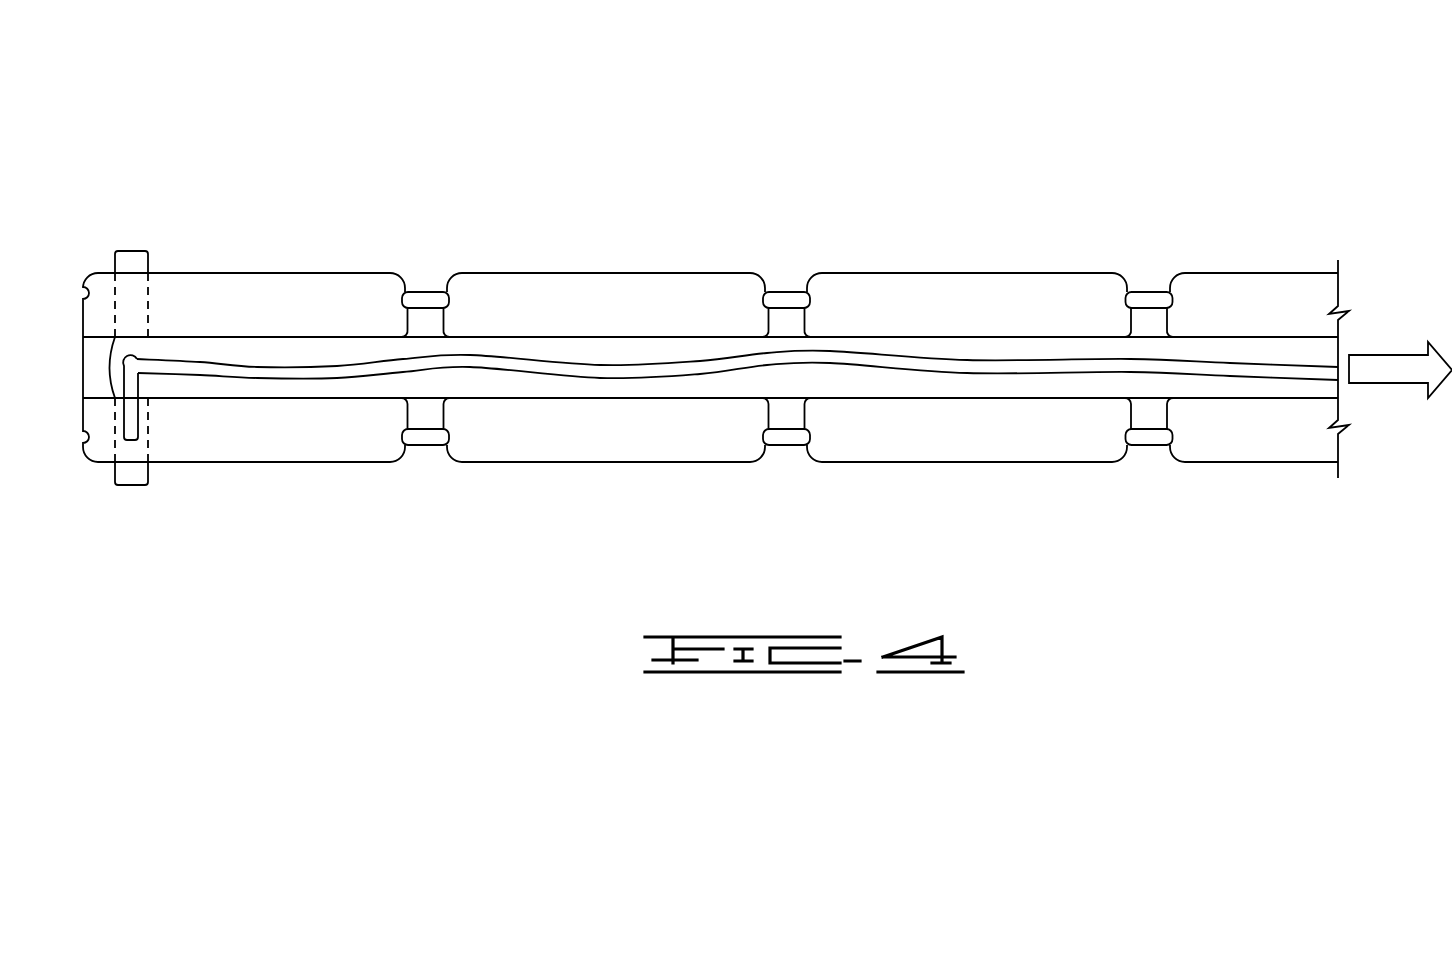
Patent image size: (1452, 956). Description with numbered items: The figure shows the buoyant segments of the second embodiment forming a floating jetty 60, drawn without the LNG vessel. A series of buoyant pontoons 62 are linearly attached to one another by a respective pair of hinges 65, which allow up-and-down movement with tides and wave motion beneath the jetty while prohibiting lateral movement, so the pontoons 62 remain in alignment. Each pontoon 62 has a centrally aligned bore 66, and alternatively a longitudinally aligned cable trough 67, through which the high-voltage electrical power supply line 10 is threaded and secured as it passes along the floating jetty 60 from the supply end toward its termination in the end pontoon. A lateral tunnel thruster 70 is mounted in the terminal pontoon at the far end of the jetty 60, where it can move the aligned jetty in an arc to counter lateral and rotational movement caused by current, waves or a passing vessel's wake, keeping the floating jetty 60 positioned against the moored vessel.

The high-voltage electrical power supply line 10 is at (257, 377).
The floating jetty 60 is at (665, 137).
The buoyant pontoon 62 is at (978, 273).
The hinge 65 is at (428, 292).
The centrally aligned bore 66 is at (710, 448).
The cable trough 67 is at (982, 398).
The lateral tunnel thruster 70 is at (131, 250).